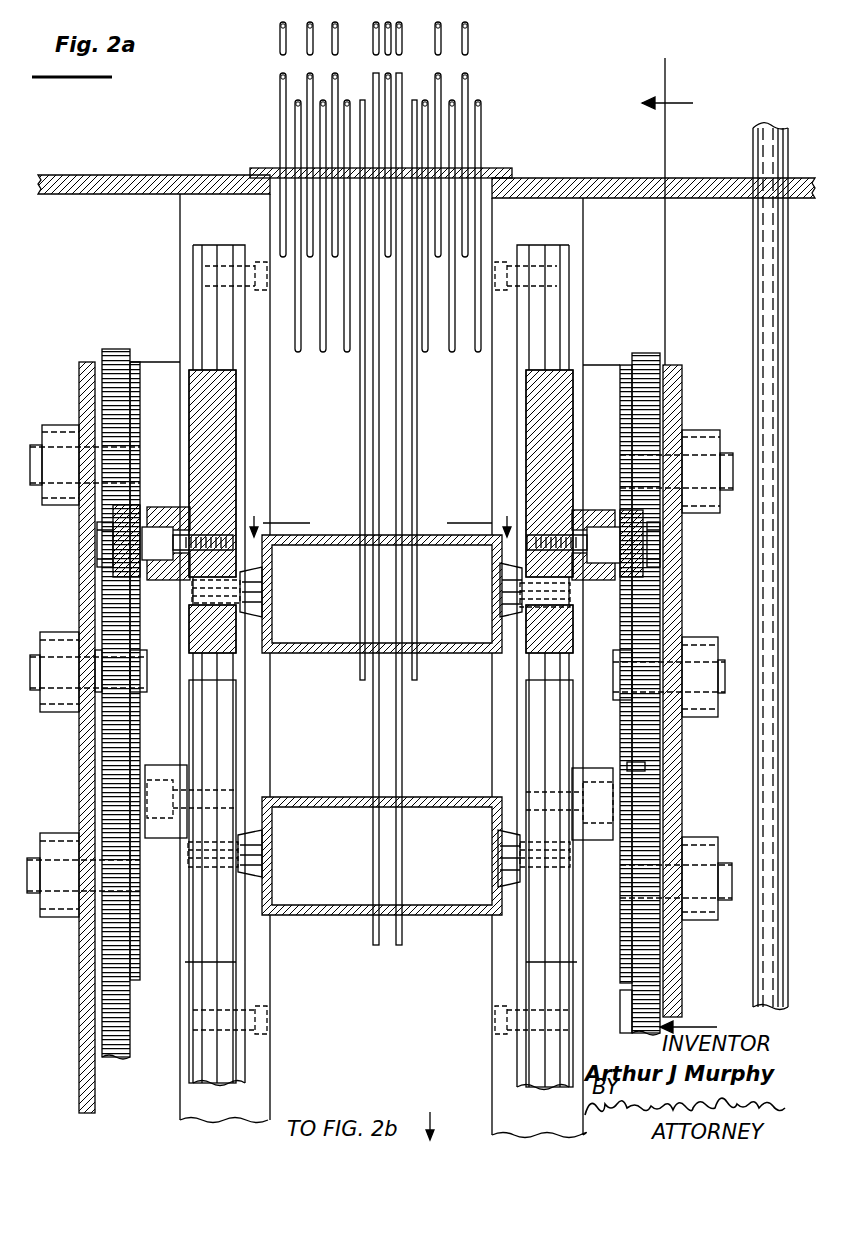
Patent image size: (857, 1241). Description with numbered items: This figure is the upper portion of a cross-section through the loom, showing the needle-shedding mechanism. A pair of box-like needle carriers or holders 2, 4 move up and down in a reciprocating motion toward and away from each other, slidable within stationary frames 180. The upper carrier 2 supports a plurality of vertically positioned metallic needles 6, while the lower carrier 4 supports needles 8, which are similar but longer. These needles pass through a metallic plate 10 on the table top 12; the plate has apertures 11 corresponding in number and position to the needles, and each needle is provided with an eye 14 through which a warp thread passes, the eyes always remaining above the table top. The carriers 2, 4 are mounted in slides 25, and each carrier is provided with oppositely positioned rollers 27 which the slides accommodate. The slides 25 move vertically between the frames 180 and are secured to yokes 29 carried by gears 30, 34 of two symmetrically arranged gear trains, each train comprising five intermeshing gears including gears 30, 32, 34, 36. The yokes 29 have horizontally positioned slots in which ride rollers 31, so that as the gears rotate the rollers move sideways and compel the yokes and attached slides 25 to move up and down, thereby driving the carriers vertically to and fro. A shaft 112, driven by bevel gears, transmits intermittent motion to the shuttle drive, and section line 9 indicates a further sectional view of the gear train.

The needle carrier 2 is at (300, 655).
The needle carrier 4 is at (320, 797).
The needles 6 is at (360, 486).
The needles 8 is at (378, 945).
The section line 9- 9 is at (679, 545).
The metallic plate 10 is at (265, 166).
The apertures 11 is at (380, 515).
The table top 12 is at (150, 175).
The eye 14 is at (470, 30).
The slides 25 is at (236, 440).
The rollers 27 is at (195, 592).
The yokes 29 is at (160, 507).
The gear 30 is at (115, 349).
The rollers 31 is at (378, 672).
The gear 32 is at (640, 628).
The gear 34 is at (626, 768).
The gear 36 is at (622, 1012).
The shaft 112 is at (753, 263).
The frames 180 is at (230, 245).